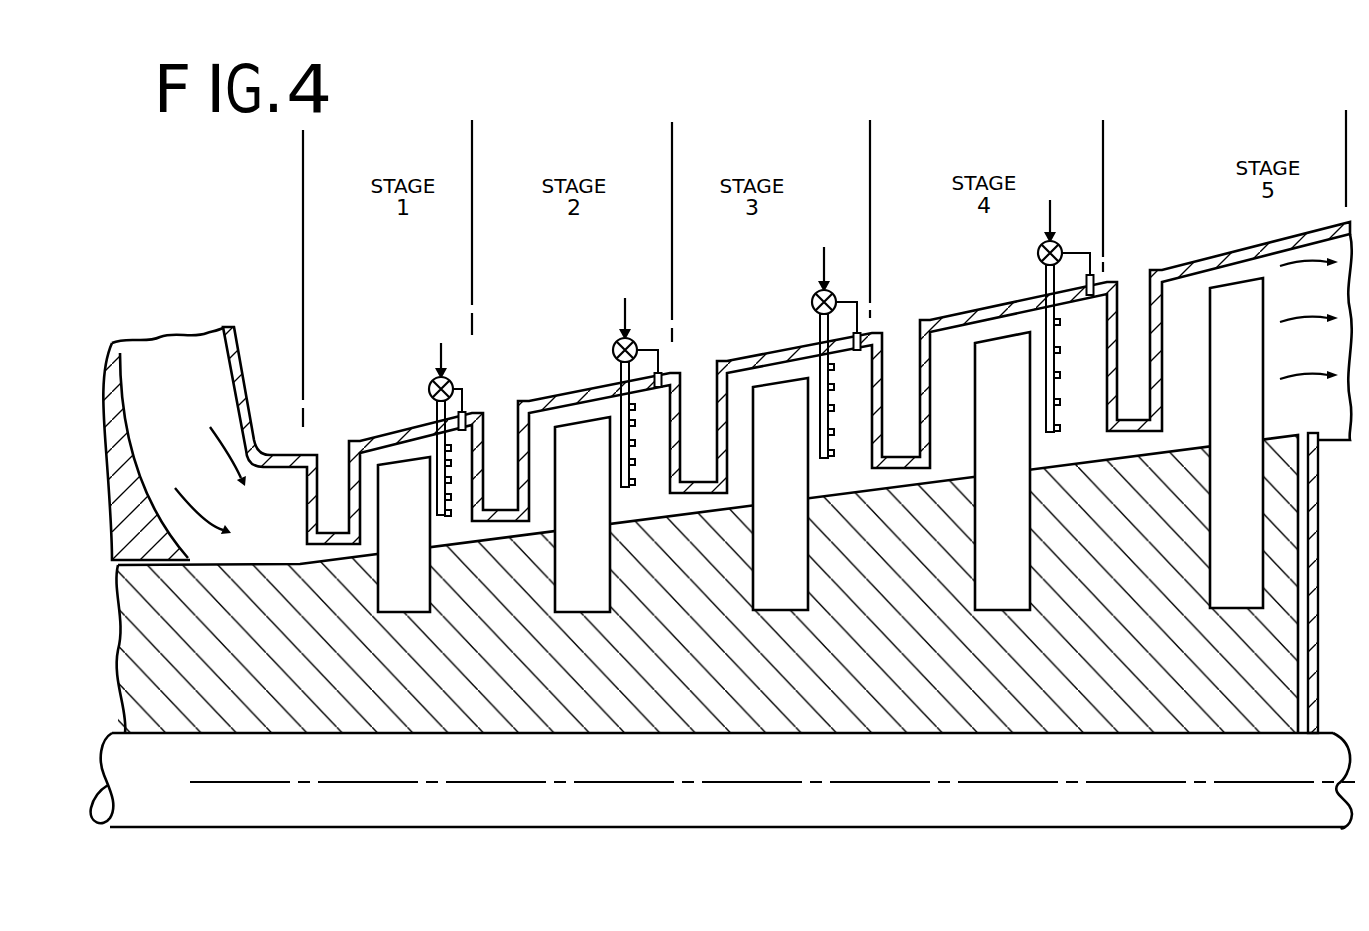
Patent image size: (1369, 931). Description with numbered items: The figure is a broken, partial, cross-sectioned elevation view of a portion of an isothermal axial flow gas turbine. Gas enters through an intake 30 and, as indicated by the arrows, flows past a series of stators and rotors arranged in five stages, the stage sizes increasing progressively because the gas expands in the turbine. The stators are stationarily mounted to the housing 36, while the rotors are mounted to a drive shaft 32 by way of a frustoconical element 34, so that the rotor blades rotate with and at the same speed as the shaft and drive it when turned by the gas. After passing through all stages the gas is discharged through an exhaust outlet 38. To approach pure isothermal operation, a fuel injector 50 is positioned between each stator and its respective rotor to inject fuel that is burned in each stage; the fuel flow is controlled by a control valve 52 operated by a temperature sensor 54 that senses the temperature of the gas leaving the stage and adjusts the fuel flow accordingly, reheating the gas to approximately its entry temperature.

The intake 30 is at (187, 403).
The drive shaft 32 is at (1126, 773).
The frustoconical element 34 is at (1133, 655).
The housing 36 is at (752, 359).
The exhaust outlet 38 is at (1318, 367).
The fuel injector 50 is at (437, 513).
The control valve 52 is at (429, 389).
The temperature sensor 54 is at (462, 430).